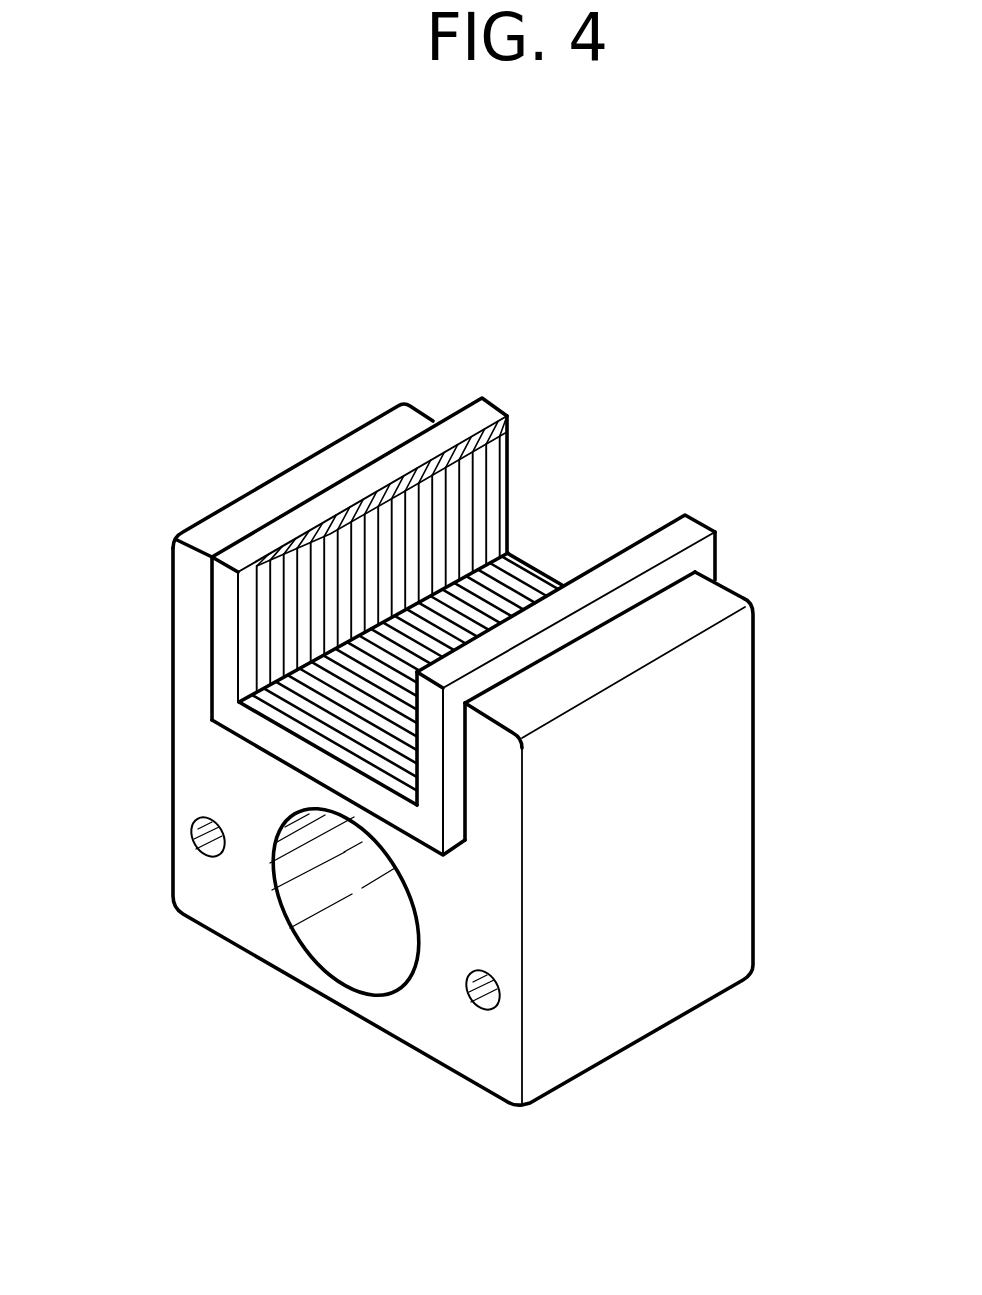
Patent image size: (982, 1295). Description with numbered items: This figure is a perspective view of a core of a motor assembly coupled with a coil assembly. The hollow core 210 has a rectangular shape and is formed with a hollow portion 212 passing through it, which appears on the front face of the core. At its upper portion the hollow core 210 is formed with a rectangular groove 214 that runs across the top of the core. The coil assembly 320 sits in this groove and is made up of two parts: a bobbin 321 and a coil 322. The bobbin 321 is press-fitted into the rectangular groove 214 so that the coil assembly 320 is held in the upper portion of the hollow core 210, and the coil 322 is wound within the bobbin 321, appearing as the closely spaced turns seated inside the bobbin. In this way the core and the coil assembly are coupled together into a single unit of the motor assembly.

The hollow core 210 is at (718, 790).
The hollow portion 212 is at (360, 920).
The rectangular groove 214 is at (280, 757).
The coil assembly 320 is at (463, 529).
The bobbin 321 is at (458, 423).
The coil 322 is at (485, 488).